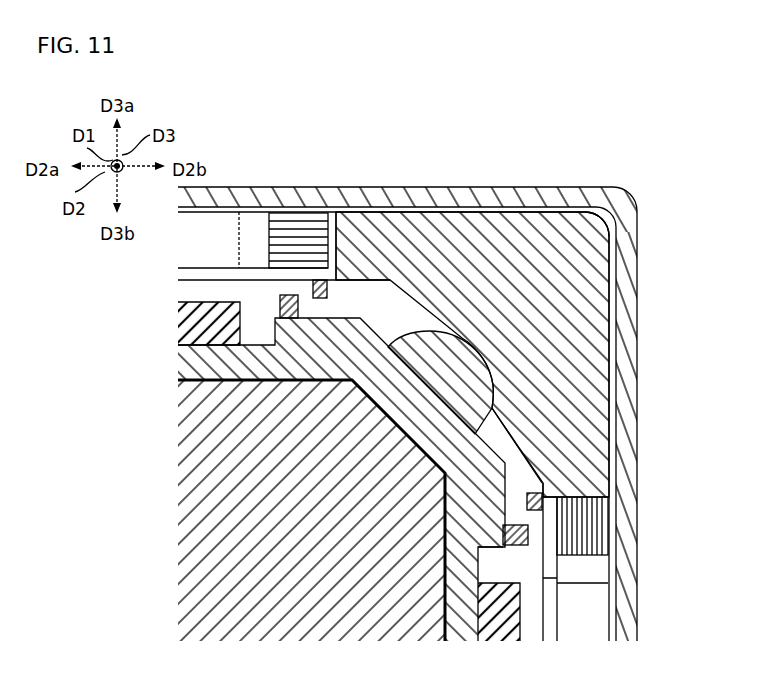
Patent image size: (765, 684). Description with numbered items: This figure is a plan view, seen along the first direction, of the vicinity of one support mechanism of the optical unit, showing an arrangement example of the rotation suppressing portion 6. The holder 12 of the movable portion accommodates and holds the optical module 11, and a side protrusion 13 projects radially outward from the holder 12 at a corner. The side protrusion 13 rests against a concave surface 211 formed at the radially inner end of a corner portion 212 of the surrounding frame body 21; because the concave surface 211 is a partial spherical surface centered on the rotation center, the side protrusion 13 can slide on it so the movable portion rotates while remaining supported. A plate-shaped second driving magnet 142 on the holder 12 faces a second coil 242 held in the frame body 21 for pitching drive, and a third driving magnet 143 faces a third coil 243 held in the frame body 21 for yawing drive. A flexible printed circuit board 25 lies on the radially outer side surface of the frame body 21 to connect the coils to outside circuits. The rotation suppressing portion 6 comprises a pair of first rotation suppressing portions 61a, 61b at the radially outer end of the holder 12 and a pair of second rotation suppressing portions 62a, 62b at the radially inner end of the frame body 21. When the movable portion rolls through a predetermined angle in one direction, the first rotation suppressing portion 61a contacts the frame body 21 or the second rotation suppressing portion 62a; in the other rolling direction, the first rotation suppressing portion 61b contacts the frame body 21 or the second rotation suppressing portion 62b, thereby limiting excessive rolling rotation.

The rotation suppressing portion 6 is at (526, 560).
The optical module 11 is at (188, 517).
The holder 12 is at (190, 367).
The side protrusion 13 is at (467, 383).
The frame body 21 is at (577, 334).
The flexible printed circuit board 25 is at (623, 288).
The first rotation suppressing portion 61a is at (528, 532).
The first rotation suppressing portion 61b is at (286, 296).
The second rotation suppressing portion 62a is at (542, 500).
The second rotation suppressing portion 62b is at (336, 288).
The second driving magnet 142 is at (190, 323).
The third driving magnet 143 is at (502, 620).
The concave surface 211 is at (512, 410).
The corner portion 212 is at (558, 296).
The second coil 242 is at (300, 224).
The third coil 243 is at (583, 540).